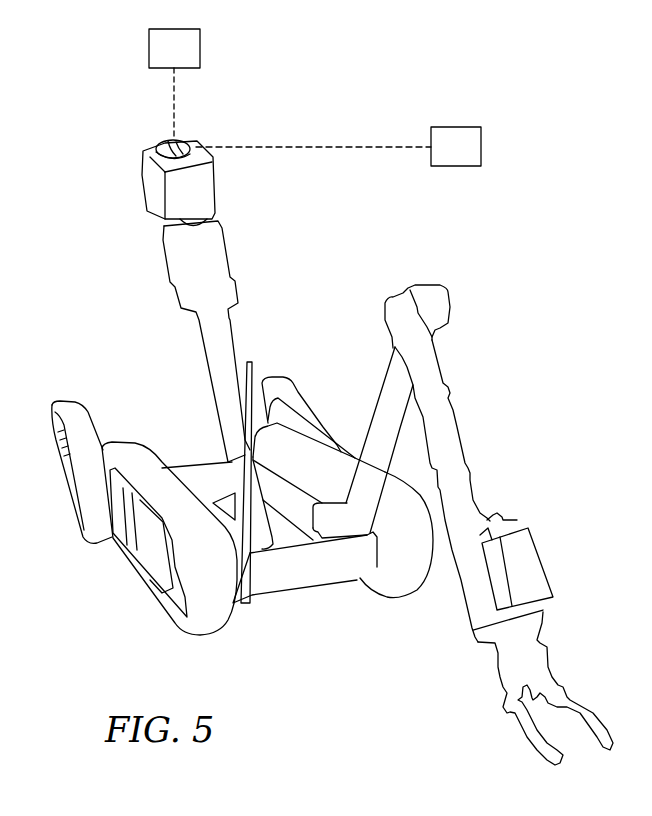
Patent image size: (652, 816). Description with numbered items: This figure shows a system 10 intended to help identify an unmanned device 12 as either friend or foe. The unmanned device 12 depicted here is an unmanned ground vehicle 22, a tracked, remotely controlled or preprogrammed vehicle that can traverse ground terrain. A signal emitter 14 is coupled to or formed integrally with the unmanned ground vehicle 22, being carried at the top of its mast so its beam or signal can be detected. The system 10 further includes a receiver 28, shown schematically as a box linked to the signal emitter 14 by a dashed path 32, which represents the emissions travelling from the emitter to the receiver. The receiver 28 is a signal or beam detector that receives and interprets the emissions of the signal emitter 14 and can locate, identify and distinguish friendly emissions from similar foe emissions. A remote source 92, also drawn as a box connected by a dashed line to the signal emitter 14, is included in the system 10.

The system 10 is at (484, 276).
The unmanned device 12 is at (256, 309).
The signal emitter 14 is at (193, 145).
The unmanned ground vehicle 22 is at (228, 258).
The receiver 28 is at (456, 146).
The communication link 32 is at (382, 144).
The remote source 92 is at (174, 84).